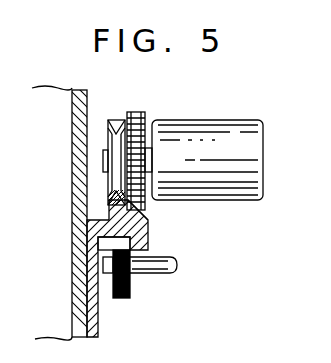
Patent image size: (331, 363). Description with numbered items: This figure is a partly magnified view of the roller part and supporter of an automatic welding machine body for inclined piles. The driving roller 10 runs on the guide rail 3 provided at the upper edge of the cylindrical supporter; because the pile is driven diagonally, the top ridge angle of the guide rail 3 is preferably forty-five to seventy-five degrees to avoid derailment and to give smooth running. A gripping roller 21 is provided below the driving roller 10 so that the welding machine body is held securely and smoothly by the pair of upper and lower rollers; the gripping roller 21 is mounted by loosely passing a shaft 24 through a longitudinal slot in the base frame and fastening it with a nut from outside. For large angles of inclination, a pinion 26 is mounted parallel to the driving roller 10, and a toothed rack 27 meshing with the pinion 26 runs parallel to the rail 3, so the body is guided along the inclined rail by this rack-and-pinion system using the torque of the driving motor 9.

The guide rail 3 is at (109, 213).
The driving motor 9 is at (226, 121).
The driving roller 10 is at (120, 118).
The gripping roller 21 is at (125, 299).
The shaft 24 is at (162, 274).
The pinion 26 is at (145, 116).
The toothed rack 27 is at (148, 232).